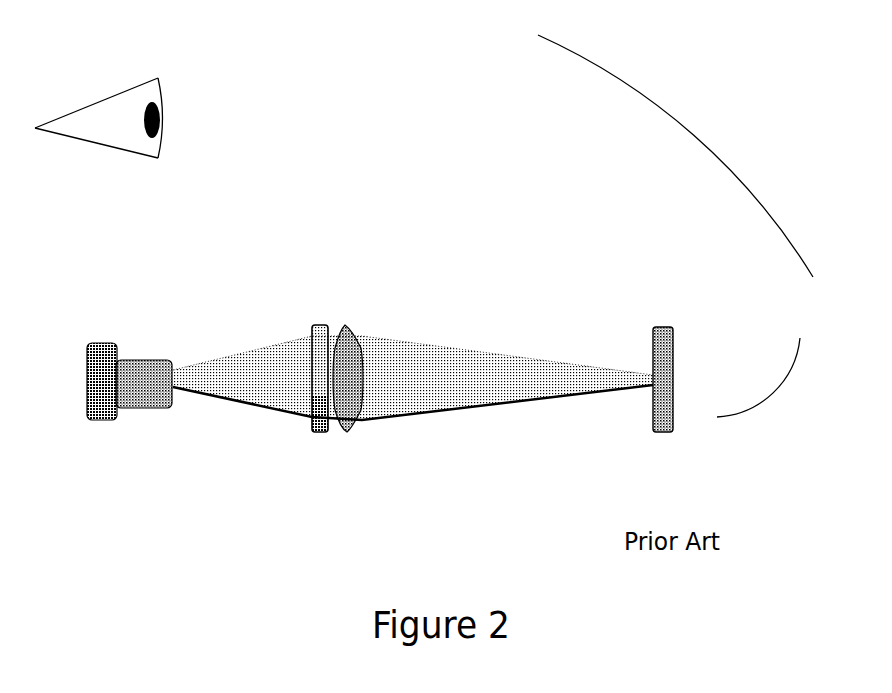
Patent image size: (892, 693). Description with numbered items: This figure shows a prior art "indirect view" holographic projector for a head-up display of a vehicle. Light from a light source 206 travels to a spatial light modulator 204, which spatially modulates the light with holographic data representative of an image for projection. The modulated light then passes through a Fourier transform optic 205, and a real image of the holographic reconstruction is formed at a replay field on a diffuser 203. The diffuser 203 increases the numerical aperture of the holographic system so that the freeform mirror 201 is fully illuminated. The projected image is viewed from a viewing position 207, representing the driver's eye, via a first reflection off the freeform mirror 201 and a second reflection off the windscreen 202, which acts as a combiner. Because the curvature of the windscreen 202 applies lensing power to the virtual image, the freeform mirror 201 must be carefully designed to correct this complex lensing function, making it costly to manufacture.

The freeform mirror 201 is at (769, 377).
The windscreen 202 is at (675, 156).
The diffuser 203 is at (664, 391).
The spatial light modulator 204 is at (313, 400).
The Fourier transform optic 205 is at (347, 405).
The light source 206 is at (95, 413).
The viewing position 207 is at (99, 118).